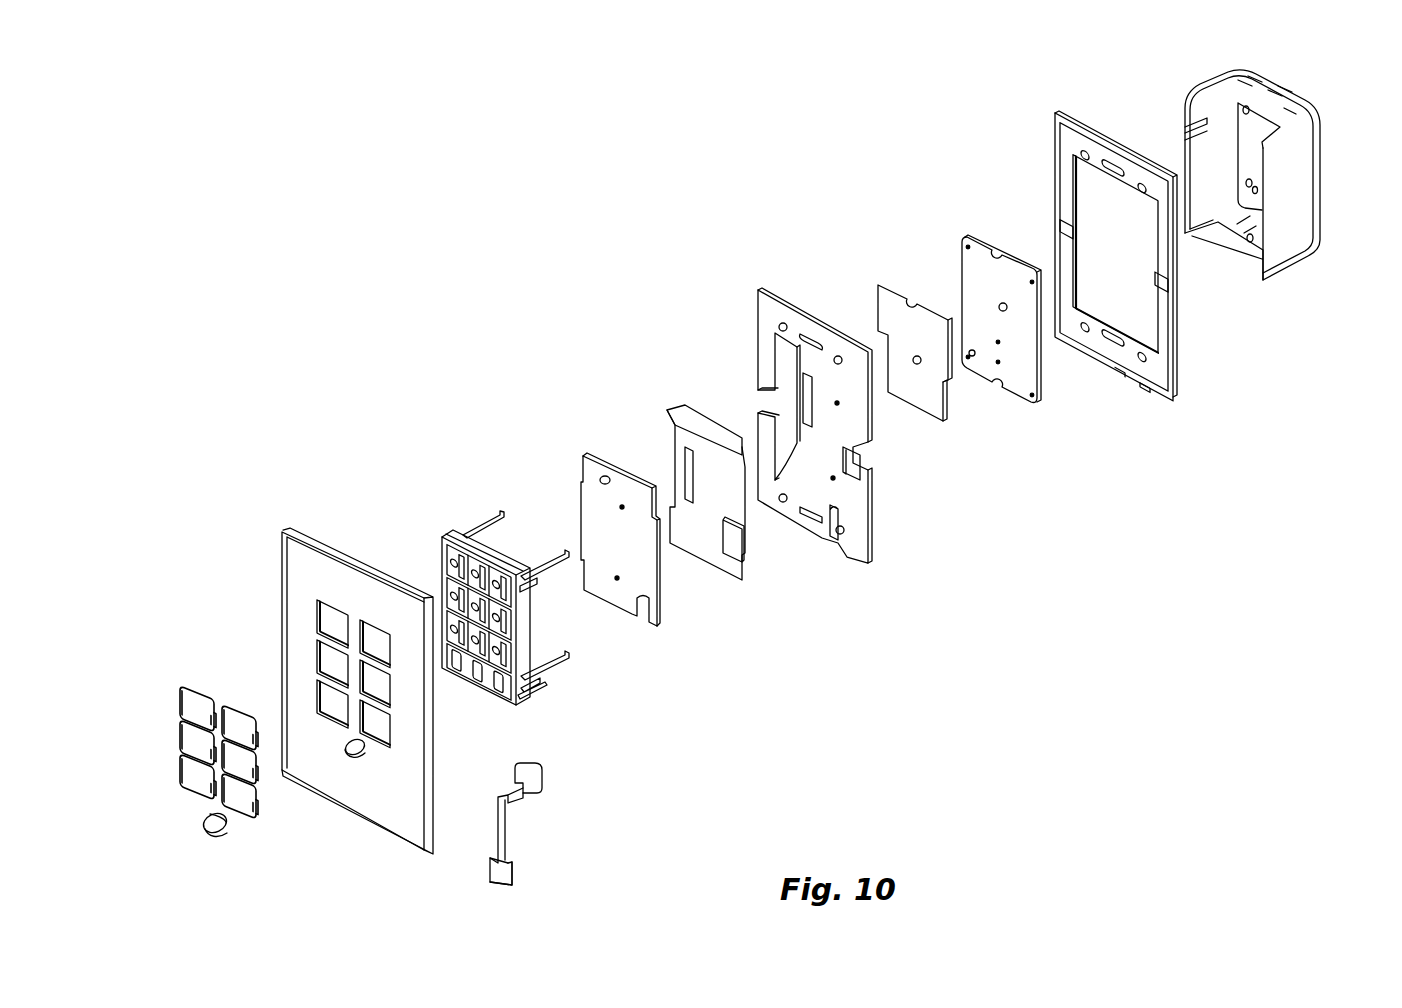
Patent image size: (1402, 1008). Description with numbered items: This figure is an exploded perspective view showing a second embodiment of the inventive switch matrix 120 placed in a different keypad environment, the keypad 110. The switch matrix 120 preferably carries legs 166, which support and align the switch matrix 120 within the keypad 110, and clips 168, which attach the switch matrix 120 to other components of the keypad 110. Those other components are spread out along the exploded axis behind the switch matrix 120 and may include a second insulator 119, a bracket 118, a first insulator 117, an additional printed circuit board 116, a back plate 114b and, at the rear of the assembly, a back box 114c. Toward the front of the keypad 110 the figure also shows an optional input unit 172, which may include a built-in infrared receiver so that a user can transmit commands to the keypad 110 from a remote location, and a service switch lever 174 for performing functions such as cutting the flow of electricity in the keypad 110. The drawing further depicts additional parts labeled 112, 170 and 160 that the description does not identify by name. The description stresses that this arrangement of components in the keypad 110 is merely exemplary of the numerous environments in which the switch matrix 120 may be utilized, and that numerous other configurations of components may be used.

The keypad 110 is at (840, 190).
The buttons 112 is at (187, 689).
The optional input unit 172 is at (204, 824).
The faceplate 170 is at (294, 527).
The switch matrix 120 is at (460, 535).
The legs 166 is at (565, 674).
The clips 168 is at (536, 693).
The service switch lever 174 is at (540, 788).
The circuit board 160 is at (602, 463).
The second insulator 119 is at (742, 582).
The bracket 118 is at (869, 566).
The first insulator 117 is at (946, 422).
The additional printed circuit board 116 is at (1038, 402).
The back plate 114b is at (1180, 396).
The back box 114c is at (1288, 270).